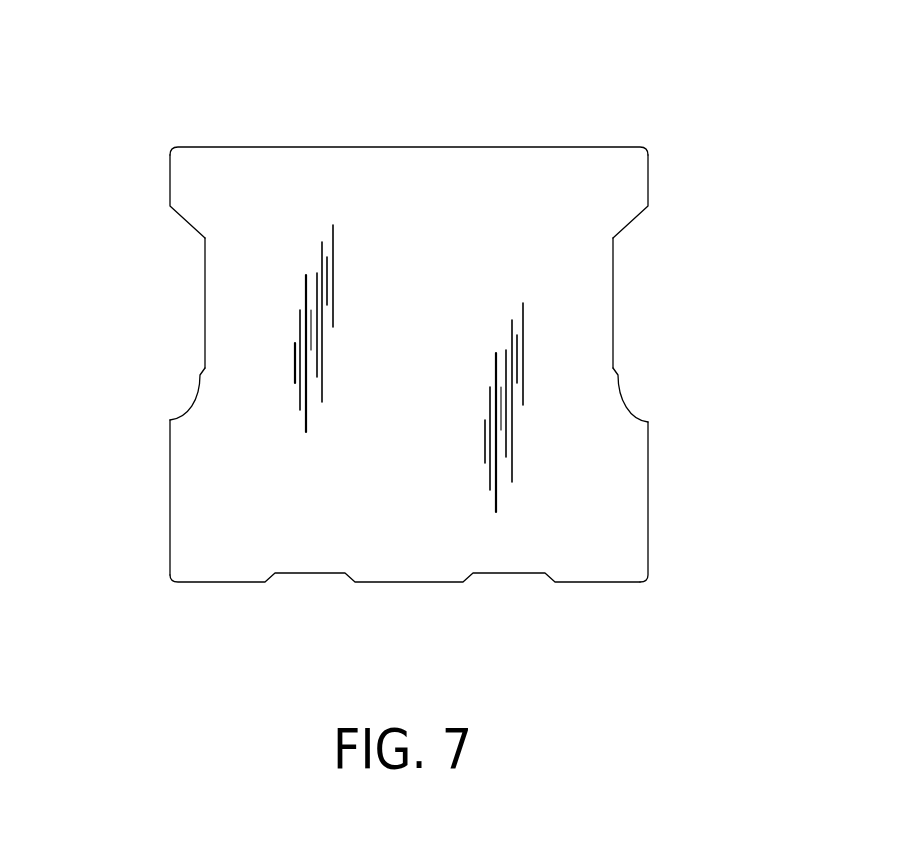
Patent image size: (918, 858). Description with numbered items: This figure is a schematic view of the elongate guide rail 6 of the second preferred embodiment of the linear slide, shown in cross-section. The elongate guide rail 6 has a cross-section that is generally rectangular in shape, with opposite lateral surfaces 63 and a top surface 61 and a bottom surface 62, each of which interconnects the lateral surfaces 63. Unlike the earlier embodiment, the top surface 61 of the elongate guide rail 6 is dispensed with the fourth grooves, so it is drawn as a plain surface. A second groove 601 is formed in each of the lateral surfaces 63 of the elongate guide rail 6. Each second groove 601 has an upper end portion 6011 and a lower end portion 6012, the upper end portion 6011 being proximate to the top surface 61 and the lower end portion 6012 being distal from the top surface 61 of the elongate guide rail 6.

The elongate guide rail 6 is at (415, 353).
The top surface 61 is at (407, 146).
The bottom surface 62 is at (593, 583).
The lateral surfaces 63 is at (170, 485).
The second groove 601 is at (205, 300).
The upper end portion 6011 is at (187, 223).
The lower end portion 6012 is at (197, 403).